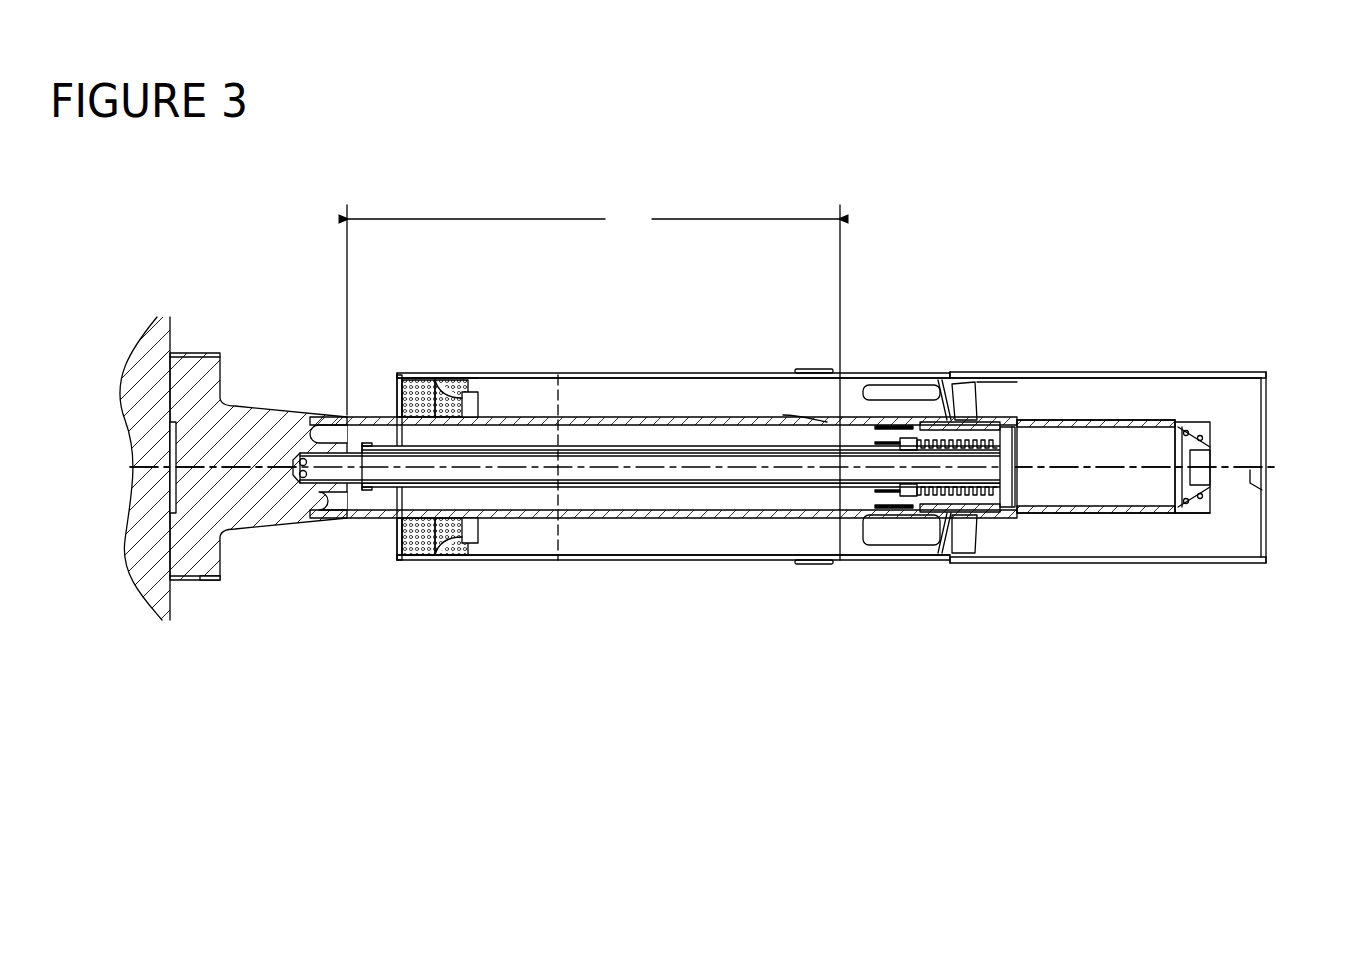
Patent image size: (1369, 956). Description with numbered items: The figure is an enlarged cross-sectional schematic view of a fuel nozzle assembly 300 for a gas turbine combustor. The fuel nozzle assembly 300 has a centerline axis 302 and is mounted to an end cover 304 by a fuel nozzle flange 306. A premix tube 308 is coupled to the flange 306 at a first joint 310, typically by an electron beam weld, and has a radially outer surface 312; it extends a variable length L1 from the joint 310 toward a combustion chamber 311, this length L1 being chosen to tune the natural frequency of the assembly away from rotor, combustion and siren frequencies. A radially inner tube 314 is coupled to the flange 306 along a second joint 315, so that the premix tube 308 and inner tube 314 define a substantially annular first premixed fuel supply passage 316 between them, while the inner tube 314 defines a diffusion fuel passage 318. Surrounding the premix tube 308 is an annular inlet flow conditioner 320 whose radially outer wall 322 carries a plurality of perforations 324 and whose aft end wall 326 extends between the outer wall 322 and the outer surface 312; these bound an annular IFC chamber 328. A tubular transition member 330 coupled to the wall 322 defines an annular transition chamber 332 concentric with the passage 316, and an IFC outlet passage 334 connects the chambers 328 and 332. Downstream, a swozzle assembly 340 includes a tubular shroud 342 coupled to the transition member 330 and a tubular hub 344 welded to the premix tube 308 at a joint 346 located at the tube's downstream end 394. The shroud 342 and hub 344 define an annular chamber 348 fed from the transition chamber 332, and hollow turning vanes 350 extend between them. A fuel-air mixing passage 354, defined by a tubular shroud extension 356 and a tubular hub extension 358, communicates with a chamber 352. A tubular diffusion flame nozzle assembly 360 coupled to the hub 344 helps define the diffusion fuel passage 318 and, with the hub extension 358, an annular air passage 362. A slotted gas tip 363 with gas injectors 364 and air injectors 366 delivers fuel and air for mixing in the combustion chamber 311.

The fuel nozzle assembly 300 is at (863, 178).
The centerline axis 302 is at (1265, 490).
The end cover 304 is at (150, 368).
The fuel nozzle flange 306 is at (262, 402).
The premix tube 308 is at (548, 540).
The first joint 310 is at (345, 508).
The combustion chamber 311 is at (1323, 471).
The radially outer surface 312 is at (382, 412).
The radially inner tube 314 is at (619, 440).
The second joint 315 is at (362, 492).
The first premixed fuel supply passage 316 is at (505, 440).
The diffusion fuel passage 318 is at (472, 520).
The inlet flow conditioner (IFC) 320 is at (443, 365).
The radially outer wall 322 is at (475, 560).
The perforations 324 is at (418, 378).
The end wall 326 is at (397, 560).
The IFC chamber 328 is at (466, 392).
The tubular transition member 330 is at (600, 560).
The transition chamber 332 is at (630, 547).
The IFC outlet passage 334 is at (560, 375).
The swozzle assembly 340 is at (972, 353).
The tubular shroud 342 is at (958, 380).
The tubular hub 344 is at (916, 436).
The joint 346 is at (835, 520).
The annular chamber 348 is at (833, 413).
The hollow turning vanes 350 is at (950, 400).
The chamber 352 is at (992, 402).
The fuel-air mixing passage 354 is at (1052, 410).
The tubular shroud extension 356 is at (1093, 372).
The tubular hub extension 358 is at (1133, 420).
The tubular diffusion flame nozzle assembly 360 is at (1107, 522).
The annular air passage 362 is at (1070, 496).
The slotted gas tip 363 is at (1178, 505).
The gas injectors 364 is at (1205, 437).
The air injectors 366 is at (1200, 468).
The downstream end 394 is at (810, 404).
The length L1 is at (594, 380).